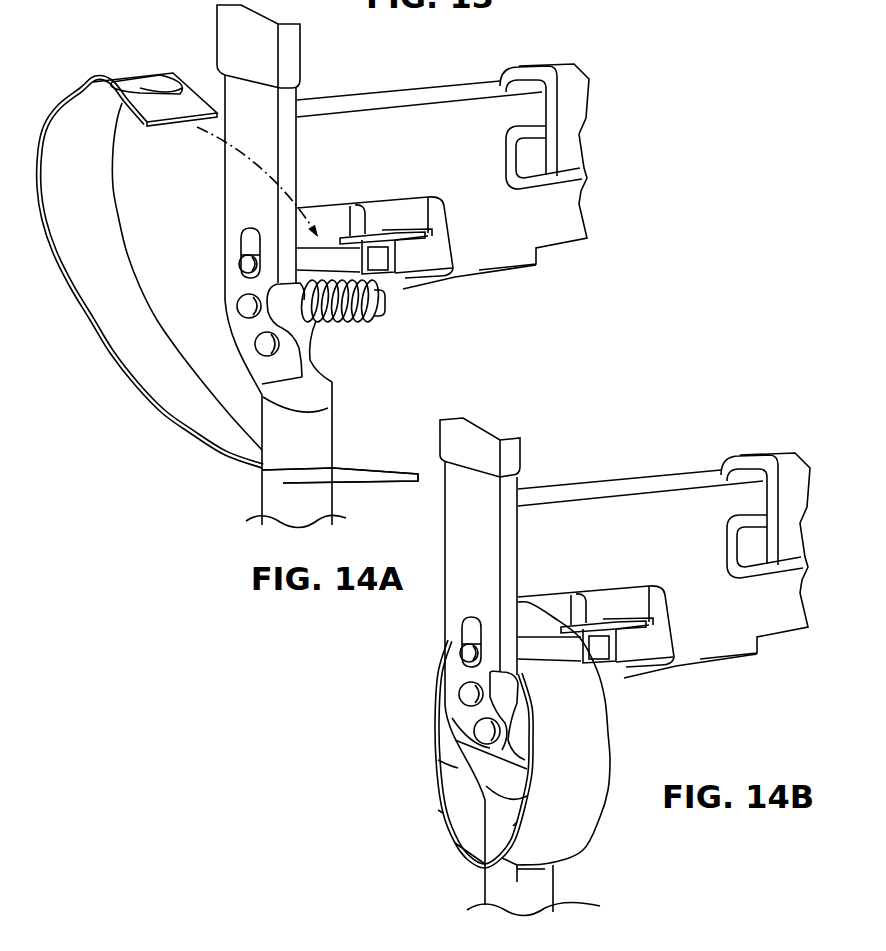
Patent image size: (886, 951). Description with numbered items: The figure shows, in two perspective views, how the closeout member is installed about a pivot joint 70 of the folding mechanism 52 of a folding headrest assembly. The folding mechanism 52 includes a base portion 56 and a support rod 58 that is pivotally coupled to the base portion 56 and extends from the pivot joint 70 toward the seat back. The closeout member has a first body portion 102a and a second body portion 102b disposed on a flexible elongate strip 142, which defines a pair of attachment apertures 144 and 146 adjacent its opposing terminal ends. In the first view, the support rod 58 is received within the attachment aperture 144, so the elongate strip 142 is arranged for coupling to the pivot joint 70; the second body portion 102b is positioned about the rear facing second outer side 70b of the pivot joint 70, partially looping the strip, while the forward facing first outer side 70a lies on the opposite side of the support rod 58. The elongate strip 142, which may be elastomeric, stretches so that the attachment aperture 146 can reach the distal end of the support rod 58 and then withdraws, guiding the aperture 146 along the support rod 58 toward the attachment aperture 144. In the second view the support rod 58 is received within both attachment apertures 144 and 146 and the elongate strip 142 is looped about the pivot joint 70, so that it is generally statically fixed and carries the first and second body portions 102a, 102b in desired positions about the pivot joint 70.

In FIG. 14A, the folding mechanism 52 is at (450, 82).
In FIG. 14B, the folding mechanism 52 is at (651, 470).
In FIG. 14A, the base portion 56 is at (548, 220).
In FIG. 14B, the base portion 56 is at (780, 611).
In FIG. 14A, the support rod 58 is at (323, 500).
In FIG. 14B, the support rod 58 is at (537, 890).
In FIG. 14A, the pivot joint 70 is at (394, 313).
In FIG. 14B, the pivot joint 70 is at (574, 695).
In FIG. 14A, the first outer side 70a is at (353, 334).
In FIG. 14B, the first outer side 70a is at (542, 714).
In FIG. 14A, the second outer side 70b is at (230, 305).
In FIG. 14B, the second outer side 70b is at (452, 683).
In FIG. 14A, the first body portion 102a is at (100, 120).
In FIG. 14B, the first body portion 102a is at (557, 813).
In FIG. 14A, the second body portion 102b is at (217, 428).
In FIG. 14B, the second body portion 102b is at (460, 768).
In FIG. 14A, the elongate strip 142 is at (54, 92).
In FIG. 14B, the elongate strip 142 is at (430, 826).
In FIG. 14A, the attachment aperture 144 is at (262, 497).
In FIG. 14B, the attachment aperture 144 is at (485, 888).
In FIG. 14A, the attachment aperture 146 is at (162, 87).
In FIG. 14B, the attachment aperture 146 is at (477, 818).